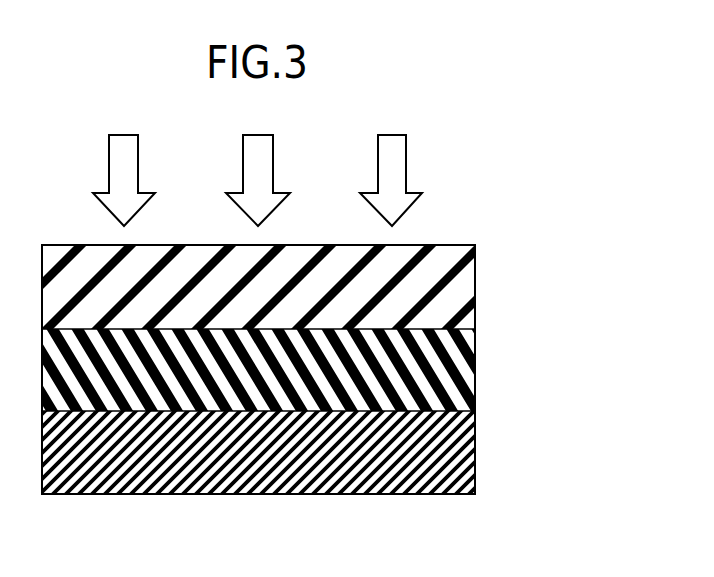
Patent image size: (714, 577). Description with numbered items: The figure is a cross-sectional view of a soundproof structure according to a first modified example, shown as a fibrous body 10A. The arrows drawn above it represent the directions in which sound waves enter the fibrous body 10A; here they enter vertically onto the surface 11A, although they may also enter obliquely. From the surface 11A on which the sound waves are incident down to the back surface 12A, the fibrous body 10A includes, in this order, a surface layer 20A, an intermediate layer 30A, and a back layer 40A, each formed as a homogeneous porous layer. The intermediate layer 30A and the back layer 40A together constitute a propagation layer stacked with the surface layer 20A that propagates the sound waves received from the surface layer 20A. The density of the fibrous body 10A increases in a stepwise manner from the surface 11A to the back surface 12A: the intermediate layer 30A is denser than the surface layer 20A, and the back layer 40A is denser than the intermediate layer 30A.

The fibrous body 10A is at (577, 264).
The surface 11A is at (443, 244).
The back surface 12A is at (445, 494).
The surface layer 20A is at (460, 286).
The intermediate layer 30A is at (458, 368).
The back layer 40A is at (462, 450).